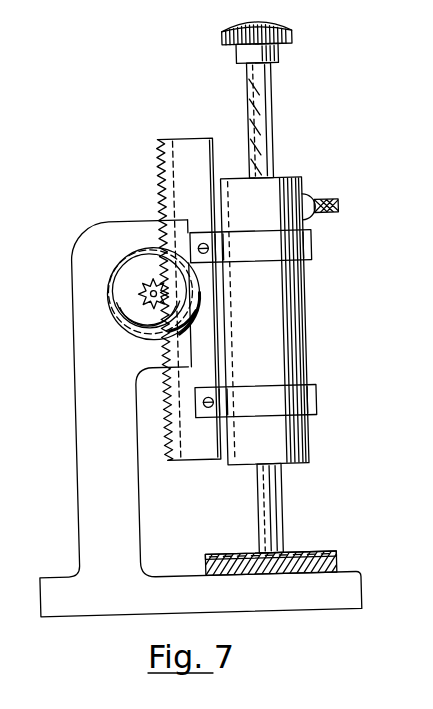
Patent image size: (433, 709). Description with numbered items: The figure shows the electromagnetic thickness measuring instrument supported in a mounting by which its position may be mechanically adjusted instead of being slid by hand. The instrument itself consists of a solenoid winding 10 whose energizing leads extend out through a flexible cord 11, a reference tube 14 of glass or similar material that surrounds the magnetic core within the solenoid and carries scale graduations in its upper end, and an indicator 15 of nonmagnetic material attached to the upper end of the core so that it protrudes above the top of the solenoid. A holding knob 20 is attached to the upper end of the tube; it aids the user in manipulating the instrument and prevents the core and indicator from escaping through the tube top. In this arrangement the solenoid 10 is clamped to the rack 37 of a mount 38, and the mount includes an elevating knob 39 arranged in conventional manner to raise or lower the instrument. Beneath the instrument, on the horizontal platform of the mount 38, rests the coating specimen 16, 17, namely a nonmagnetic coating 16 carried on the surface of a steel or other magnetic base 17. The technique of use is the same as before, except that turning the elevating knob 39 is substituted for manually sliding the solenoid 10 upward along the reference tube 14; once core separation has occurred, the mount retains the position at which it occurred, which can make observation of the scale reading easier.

The solenoid winding 10 is at (303, 352).
The flexible cord 11 is at (329, 200).
The reference tube 14 is at (281, 505).
The indicator 15 is at (273, 136).
The nonmagnetic coating 16 is at (208, 556).
The magnetic base 17 is at (333, 563).
The holding knob 20 is at (297, 55).
The rack 37 is at (197, 115).
The mount 38 is at (70, 514).
The elevating knob 39 is at (136, 337).